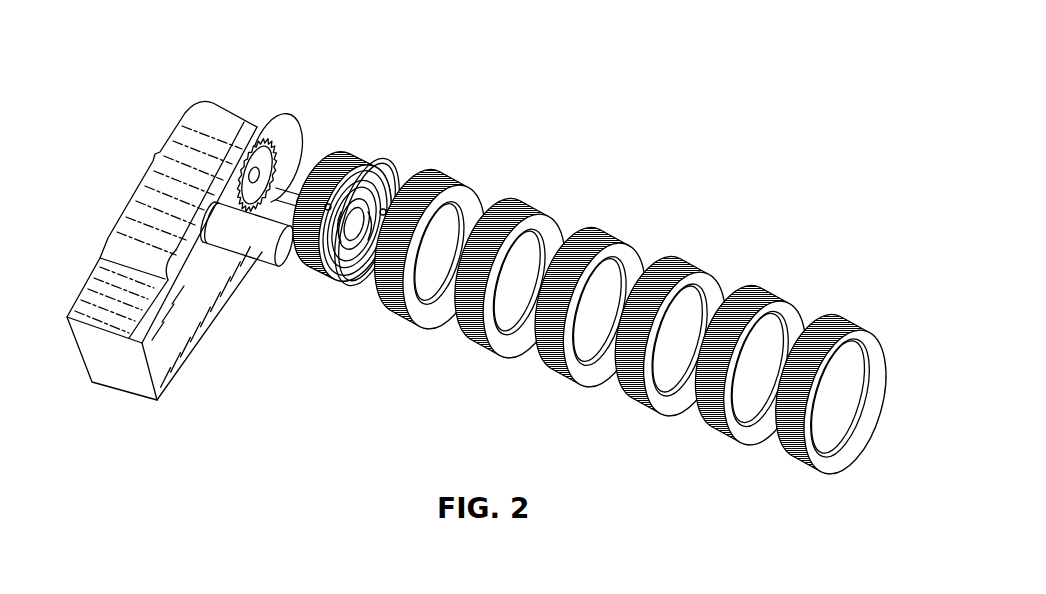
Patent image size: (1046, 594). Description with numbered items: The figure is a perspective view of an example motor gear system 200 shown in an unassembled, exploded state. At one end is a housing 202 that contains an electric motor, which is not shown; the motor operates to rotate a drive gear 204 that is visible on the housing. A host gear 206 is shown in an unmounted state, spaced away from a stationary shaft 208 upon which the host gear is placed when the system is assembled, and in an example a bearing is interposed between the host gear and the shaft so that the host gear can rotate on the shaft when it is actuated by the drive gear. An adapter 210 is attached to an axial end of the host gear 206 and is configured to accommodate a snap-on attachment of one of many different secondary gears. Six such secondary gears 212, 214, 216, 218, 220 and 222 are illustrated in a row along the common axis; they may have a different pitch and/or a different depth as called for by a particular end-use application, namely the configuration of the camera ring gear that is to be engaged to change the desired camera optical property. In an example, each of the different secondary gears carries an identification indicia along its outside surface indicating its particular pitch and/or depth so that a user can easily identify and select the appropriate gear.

The motor gear system 200 is at (160, 50).
The housing 202 is at (168, 197).
The drive gear 204 is at (268, 157).
The host gear 206 is at (352, 156).
The stationary shaft 208 is at (293, 177).
The adapter 210 is at (388, 165).
The secondary gear 212 is at (472, 190).
The secondary gear 214 is at (552, 222).
The secondary gear 216 is at (633, 247).
The secondary gear 218 is at (708, 275).
The secondary gear 220 is at (790, 303).
The secondary gear 222 is at (870, 333).